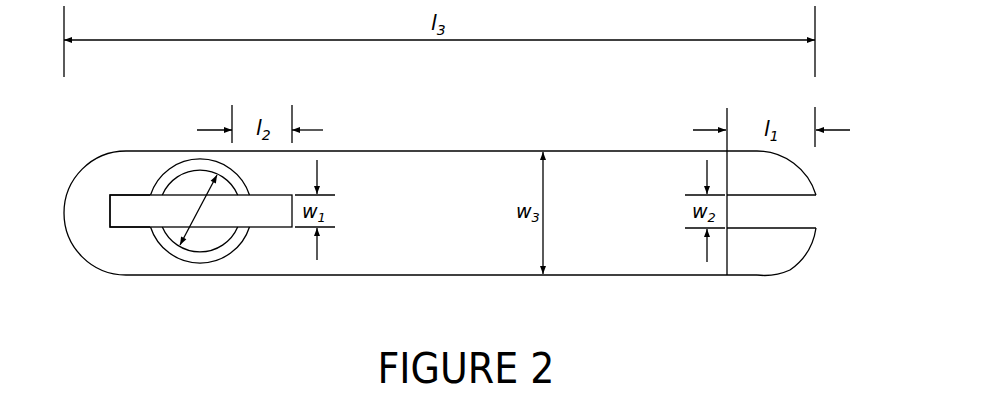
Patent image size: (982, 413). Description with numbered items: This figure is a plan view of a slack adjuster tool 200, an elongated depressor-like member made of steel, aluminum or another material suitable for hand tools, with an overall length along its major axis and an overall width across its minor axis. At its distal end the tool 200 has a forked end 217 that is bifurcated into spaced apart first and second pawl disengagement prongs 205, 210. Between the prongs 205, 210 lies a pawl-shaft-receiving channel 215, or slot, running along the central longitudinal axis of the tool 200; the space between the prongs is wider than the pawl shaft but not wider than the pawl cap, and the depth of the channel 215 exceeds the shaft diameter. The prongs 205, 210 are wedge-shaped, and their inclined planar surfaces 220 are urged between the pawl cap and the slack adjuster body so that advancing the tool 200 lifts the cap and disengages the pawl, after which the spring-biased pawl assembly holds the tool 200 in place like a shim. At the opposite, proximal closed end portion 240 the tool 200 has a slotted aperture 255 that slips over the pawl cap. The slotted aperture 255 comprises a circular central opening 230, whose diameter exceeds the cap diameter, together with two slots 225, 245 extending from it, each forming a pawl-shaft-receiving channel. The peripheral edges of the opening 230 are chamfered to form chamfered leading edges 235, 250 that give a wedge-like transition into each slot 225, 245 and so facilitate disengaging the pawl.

The tool 200 is at (452, 177).
The first pawl disengagement prong 205 is at (803, 168).
The second pawl disengagement prong 210 is at (808, 247).
The pawl-shaft-receiving channel 215 is at (787, 212).
The forked end 217 is at (807, 260).
The inclined planar surfaces 220 is at (768, 178).
The slot 225 is at (270, 212).
The central opening 230 is at (217, 238).
The chamfered leading edge 235 is at (200, 253).
The proximal closed end portion 240 is at (67, 187).
The slot 245 is at (125, 207).
The chamfered leading edge 250 is at (197, 165).
The slotted aperture 255 is at (148, 242).